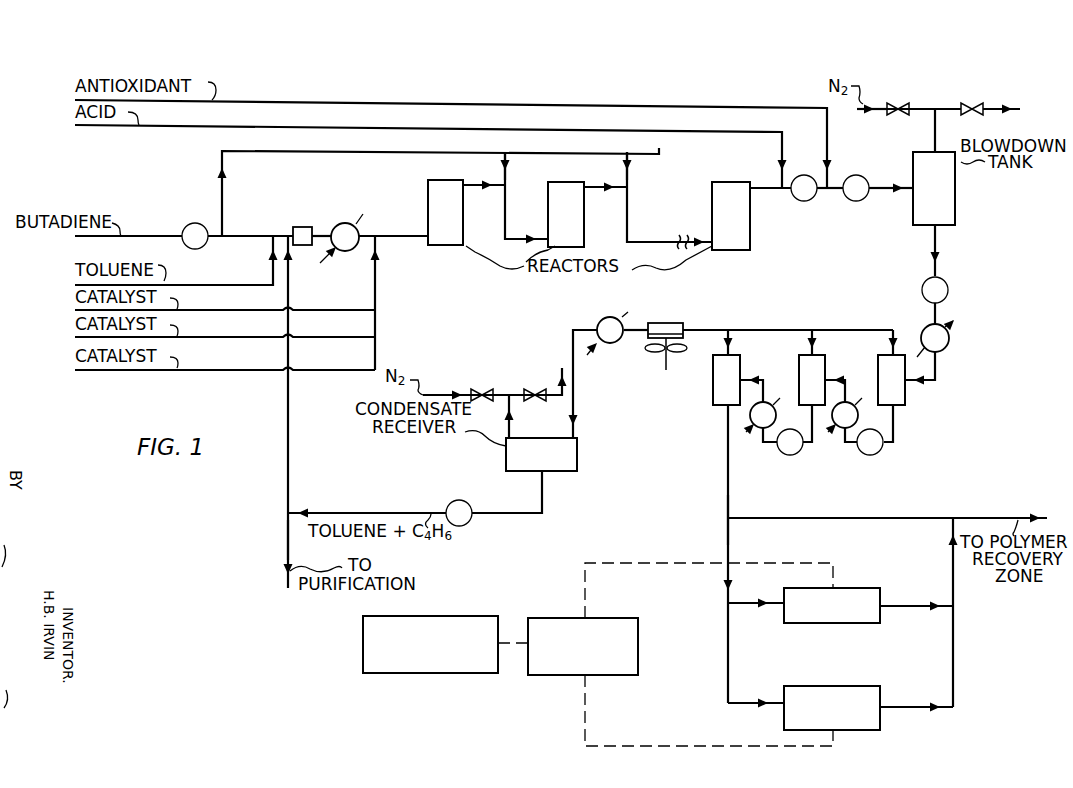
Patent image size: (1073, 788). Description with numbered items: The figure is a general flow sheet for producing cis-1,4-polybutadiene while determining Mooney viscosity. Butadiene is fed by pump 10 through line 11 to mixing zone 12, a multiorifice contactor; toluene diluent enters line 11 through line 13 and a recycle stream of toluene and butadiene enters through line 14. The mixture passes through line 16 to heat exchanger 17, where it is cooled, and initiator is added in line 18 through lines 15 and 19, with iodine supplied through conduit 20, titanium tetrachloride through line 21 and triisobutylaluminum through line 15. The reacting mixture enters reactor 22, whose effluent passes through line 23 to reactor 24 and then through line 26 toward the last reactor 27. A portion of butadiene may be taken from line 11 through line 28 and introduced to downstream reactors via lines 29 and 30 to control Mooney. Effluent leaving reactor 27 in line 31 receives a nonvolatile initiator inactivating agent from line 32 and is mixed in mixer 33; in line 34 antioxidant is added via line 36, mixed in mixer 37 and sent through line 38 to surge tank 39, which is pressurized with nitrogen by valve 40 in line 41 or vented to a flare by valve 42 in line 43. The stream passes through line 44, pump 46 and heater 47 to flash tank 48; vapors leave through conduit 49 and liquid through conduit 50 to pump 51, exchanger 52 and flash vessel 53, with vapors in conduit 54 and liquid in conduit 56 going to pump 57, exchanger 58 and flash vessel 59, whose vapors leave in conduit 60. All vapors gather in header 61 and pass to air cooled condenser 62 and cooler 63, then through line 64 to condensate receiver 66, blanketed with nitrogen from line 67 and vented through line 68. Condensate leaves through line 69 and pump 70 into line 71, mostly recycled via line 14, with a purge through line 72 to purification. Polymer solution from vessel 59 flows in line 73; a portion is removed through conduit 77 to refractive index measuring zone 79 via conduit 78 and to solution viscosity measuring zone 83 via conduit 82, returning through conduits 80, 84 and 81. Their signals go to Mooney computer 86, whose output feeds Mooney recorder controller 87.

The pump 10 is at (186, 231).
The line 11 is at (245, 234).
The mixing zone 12 is at (280, 234).
The line 13 is at (271, 270).
The line 14 is at (288, 278).
The line 15 is at (249, 370).
The line 16 is at (314, 225).
The heat exchanger 17 is at (343, 224).
The line 18 is at (374, 232).
The line 19 is at (375, 267).
The conduit 20 is at (262, 310).
The line 21 is at (263, 337).
The reactor 22 is at (428, 212).
The line 23 is at (506, 210).
The reactor 24 is at (584, 212).
The line 26 is at (627, 214).
The last reactor 27 is at (714, 196).
The line 28 is at (220, 167).
The line 29 is at (508, 178).
The line 30 is at (631, 178).
The line 31 is at (766, 187).
The line 32 is at (272, 125).
The mixer 33 is at (804, 200).
The line 34 is at (826, 190).
The line 36 is at (328, 104).
The mixer 37 is at (870, 180).
The line 38 is at (900, 184).
The surge tank 39 is at (955, 193).
The valve 40 is at (892, 101).
The line 41 is at (924, 104).
The valve 42 is at (966, 102).
The line 43 is at (1009, 103).
The line 44 is at (933, 266).
The pump 46 is at (940, 284).
The heater 47 is at (946, 337).
The flash tank 48 is at (879, 364).
The conduit 49 is at (891, 349).
The conduit 50 is at (893, 412).
The pump 51 is at (870, 449).
The exchanger 52 is at (858, 415).
The flash vessel 53 is at (799, 364).
The conduit 54 is at (812, 350).
The conduit 56 is at (814, 419).
The pump 57 is at (794, 449).
The exchanger 58 is at (750, 415).
The flash vessel 59 is at (714, 365).
The conduit 60 is at (728, 349).
The header 61 is at (764, 330).
The air cooled condenser 62 is at (671, 322).
The cooler 63 is at (610, 315).
The line 64 is at (573, 351).
The condensate receiver 66 is at (577, 462).
The line 67 is at (468, 390).
The line 68 is at (514, 392).
The line 69 is at (542, 500).
The pump 70 is at (464, 501).
The line 71 is at (374, 511).
The line 72 is at (288, 535).
The line 73 is at (978, 515).
The conduit 77 is at (728, 518).
The conduit 78 is at (748, 602).
The refractive index measuring zone 79 is at (877, 588).
The conduit 80 is at (919, 606).
The conduit 81 is at (953, 537).
The conduit 82 is at (727, 704).
The solution viscosity measuring zone 83 is at (873, 696).
The conduit 84 is at (918, 709).
The Mooney computer 86 is at (611, 618).
The Mooney recorder controller 87 is at (474, 616).